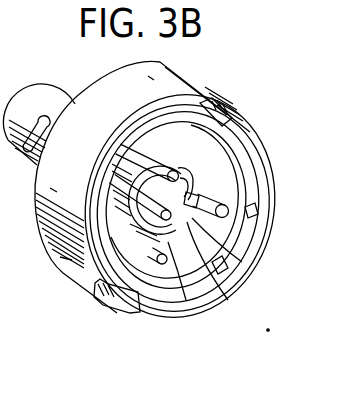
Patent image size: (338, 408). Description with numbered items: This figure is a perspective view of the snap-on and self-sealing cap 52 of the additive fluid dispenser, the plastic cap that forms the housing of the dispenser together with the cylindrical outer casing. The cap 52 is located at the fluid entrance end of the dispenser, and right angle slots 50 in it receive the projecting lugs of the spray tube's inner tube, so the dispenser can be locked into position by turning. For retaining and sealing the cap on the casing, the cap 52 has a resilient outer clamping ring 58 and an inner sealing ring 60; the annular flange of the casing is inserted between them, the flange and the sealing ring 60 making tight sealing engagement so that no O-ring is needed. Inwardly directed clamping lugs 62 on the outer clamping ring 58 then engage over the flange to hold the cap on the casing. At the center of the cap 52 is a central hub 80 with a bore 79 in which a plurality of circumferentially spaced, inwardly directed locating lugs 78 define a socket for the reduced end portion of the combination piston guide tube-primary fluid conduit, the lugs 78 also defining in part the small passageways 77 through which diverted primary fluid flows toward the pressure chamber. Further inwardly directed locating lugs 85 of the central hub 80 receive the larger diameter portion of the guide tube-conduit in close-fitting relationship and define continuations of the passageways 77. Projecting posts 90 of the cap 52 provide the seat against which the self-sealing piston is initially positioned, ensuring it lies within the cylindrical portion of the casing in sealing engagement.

The right angle slots 50 is at (27, 124).
The cap 52 is at (262, 62).
The outer clamping ring 58 is at (255, 162).
The inner sealing ring 60 is at (237, 157).
The clamping lugs 62 is at (228, 116).
The passageways 77 is at (257, 225).
The locating lugs 78 is at (141, 163).
The bore 79 is at (230, 266).
The central hub 80 is at (53, 98).
The locating lugs 85 is at (210, 277).
The projecting posts 90 is at (161, 265).